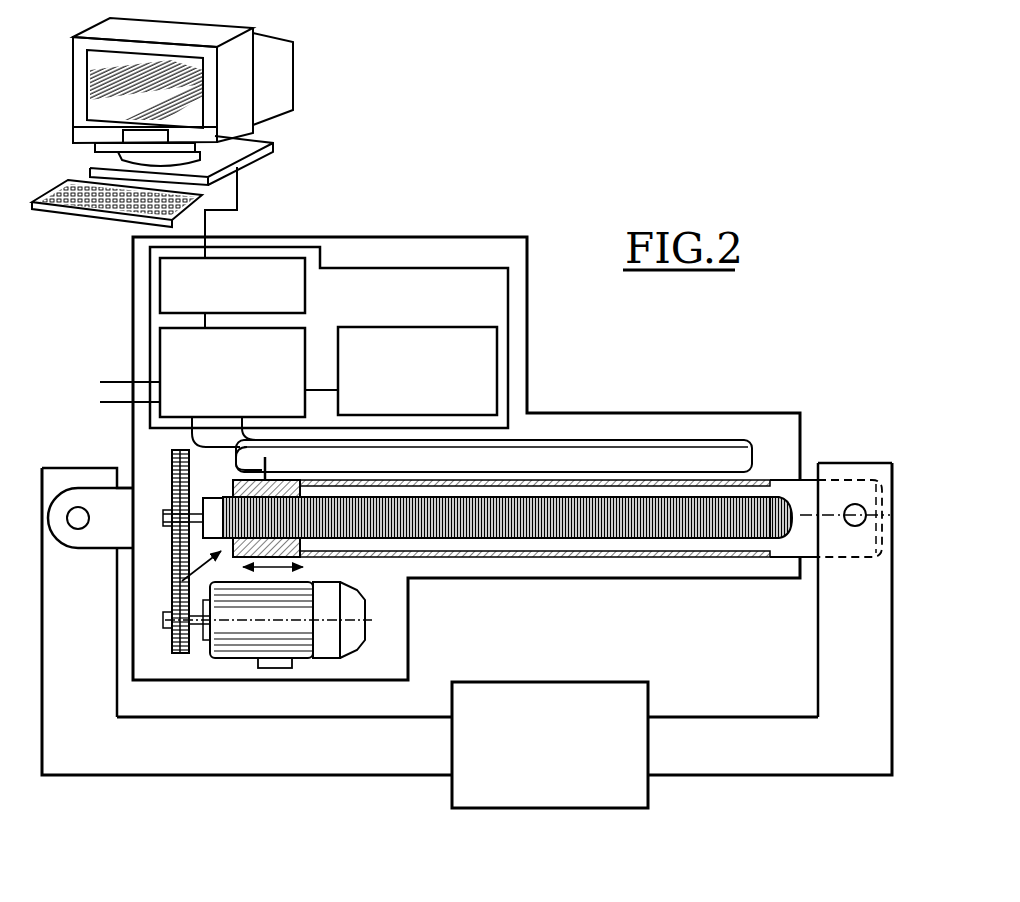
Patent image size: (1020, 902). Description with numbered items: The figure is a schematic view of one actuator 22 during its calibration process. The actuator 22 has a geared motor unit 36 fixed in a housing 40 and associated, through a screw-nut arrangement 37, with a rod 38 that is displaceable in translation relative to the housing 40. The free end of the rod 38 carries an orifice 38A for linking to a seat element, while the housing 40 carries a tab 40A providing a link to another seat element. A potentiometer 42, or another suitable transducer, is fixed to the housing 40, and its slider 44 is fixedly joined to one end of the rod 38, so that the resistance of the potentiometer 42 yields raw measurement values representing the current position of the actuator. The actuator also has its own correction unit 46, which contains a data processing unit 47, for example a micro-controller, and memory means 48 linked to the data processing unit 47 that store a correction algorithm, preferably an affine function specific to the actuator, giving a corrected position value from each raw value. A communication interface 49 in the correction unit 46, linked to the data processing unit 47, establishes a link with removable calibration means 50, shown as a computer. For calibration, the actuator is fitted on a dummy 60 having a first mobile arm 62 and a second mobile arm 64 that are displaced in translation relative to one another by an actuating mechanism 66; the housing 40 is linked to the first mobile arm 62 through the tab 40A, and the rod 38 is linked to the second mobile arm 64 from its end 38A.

The actuator 22 is at (536, 382).
The geared motor unit 36 is at (302, 649).
The screw-nut arrangement 37 is at (172, 577).
The rod 38 is at (508, 557).
The orifice 38A is at (848, 500).
The housing 40 is at (366, 681).
The tab 40A is at (106, 524).
The potentiometer 42 is at (752, 456).
The slider 44 is at (262, 468).
The correction unit 46 is at (360, 268).
The data processing unit 47 is at (160, 349).
The memory means 48 is at (471, 346).
The communication interface 49 is at (283, 258).
The calibration means 50 is at (304, 117).
The dummy 60 is at (607, 818).
The first mobile arm 62 is at (247, 753).
The second mobile arm 64 is at (803, 740).
The actuating mechanism 66 is at (613, 700).